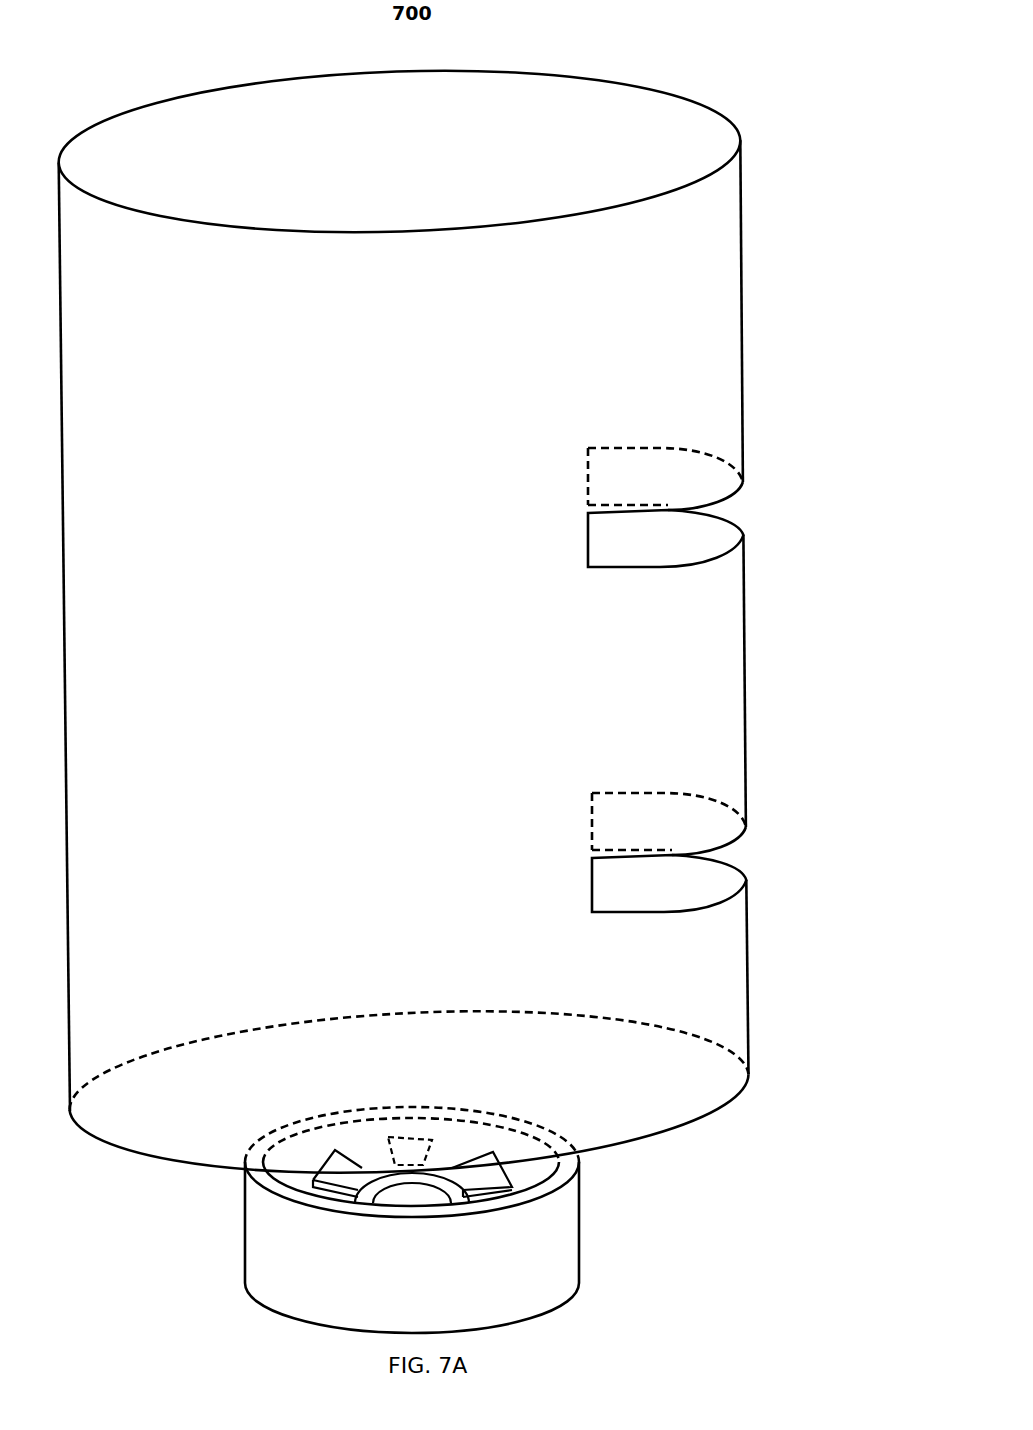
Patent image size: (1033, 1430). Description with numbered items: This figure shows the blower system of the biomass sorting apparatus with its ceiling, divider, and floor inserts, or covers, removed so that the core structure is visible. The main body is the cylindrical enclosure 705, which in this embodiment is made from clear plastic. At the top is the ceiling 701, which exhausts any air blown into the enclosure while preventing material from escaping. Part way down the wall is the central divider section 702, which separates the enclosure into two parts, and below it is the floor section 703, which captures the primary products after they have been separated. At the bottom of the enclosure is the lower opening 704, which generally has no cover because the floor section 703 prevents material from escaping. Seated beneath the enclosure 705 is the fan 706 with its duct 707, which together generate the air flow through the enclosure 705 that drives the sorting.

The ceiling 701 is at (660, 142).
The central divider section 702 is at (703, 485).
The floor section 703 is at (703, 828).
The lower opening 704 is at (613, 1110).
The cylindrical enclosure 705 is at (662, 370).
The fan 706 is at (283, 1250).
The duct 707 is at (380, 1137).